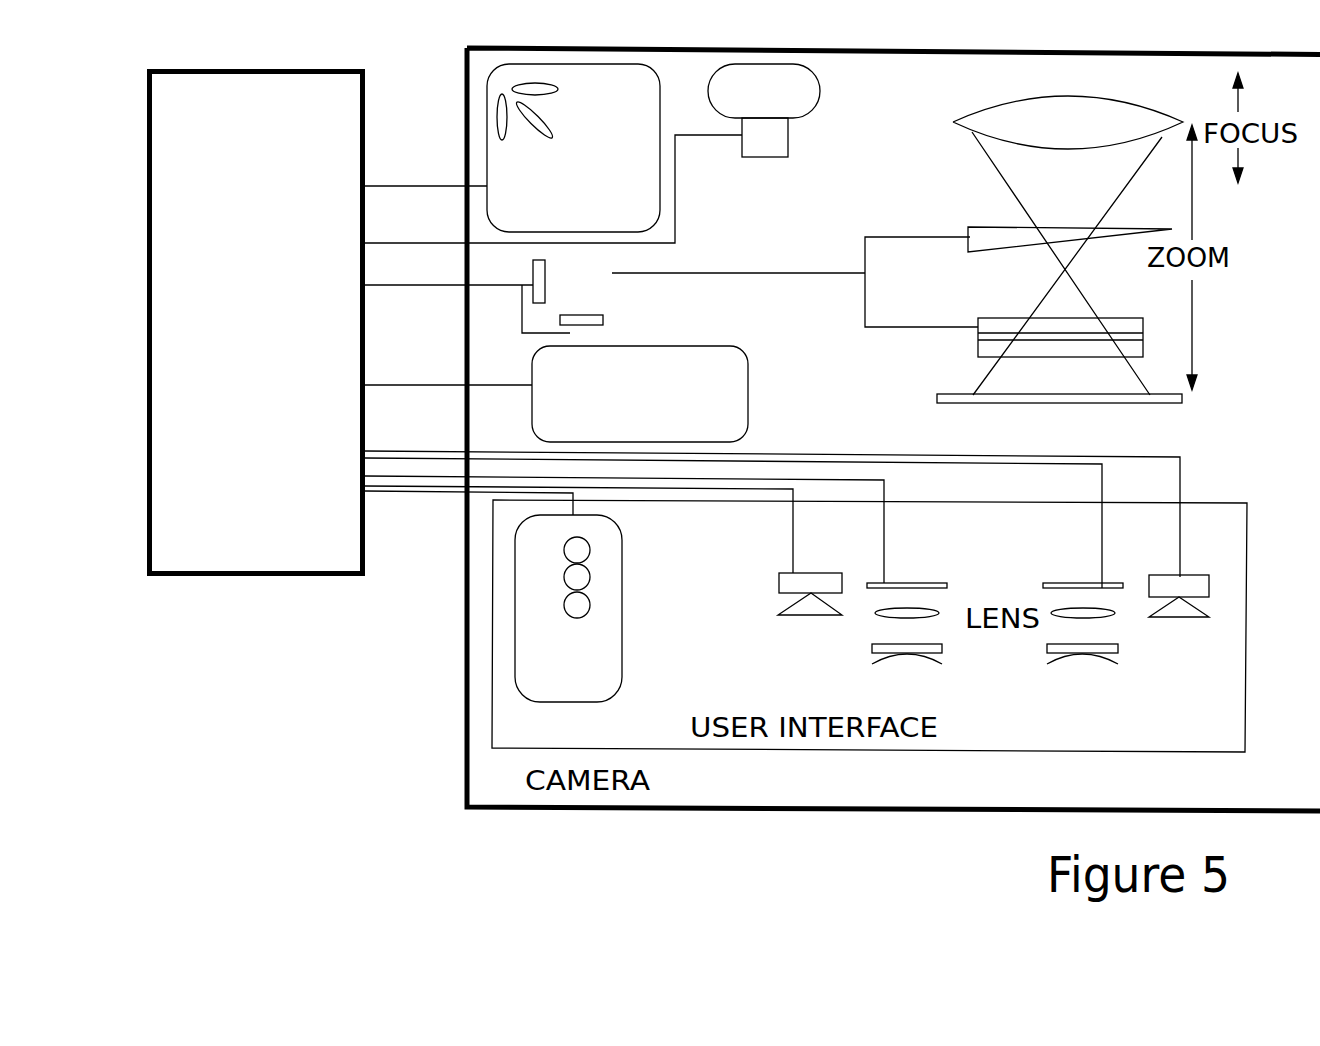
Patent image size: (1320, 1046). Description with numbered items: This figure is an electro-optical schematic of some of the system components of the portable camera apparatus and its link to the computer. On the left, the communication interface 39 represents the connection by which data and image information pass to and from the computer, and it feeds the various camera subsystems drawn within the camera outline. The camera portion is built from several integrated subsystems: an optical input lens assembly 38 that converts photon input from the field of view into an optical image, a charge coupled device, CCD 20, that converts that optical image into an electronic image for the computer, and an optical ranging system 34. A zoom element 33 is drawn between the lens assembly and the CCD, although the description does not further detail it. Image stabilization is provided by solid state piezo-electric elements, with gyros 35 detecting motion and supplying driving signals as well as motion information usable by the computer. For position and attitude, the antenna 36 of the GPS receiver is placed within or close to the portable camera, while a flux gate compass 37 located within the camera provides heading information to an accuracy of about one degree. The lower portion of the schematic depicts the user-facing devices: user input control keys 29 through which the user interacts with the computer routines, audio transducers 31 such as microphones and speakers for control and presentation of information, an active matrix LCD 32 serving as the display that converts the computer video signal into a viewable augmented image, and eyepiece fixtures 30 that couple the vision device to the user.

The charge coupled device (CCD) 20 is at (1059, 417).
The user input control keys 29 is at (610, 638).
The eyepiece fixtures 30 is at (942, 652).
The audio transducers 31 is at (1178, 582).
The active matrix LCD 32 is at (947, 582).
The zoom 33 is at (990, 328).
The optical ranging system 34 is at (793, 96).
The gyros 35 is at (590, 292).
The antenna 36 is at (690, 397).
The flux gate compass 37 is at (642, 193).
The optical input lens assembly 38 is at (1068, 122).
The communication 39 is at (256, 323).